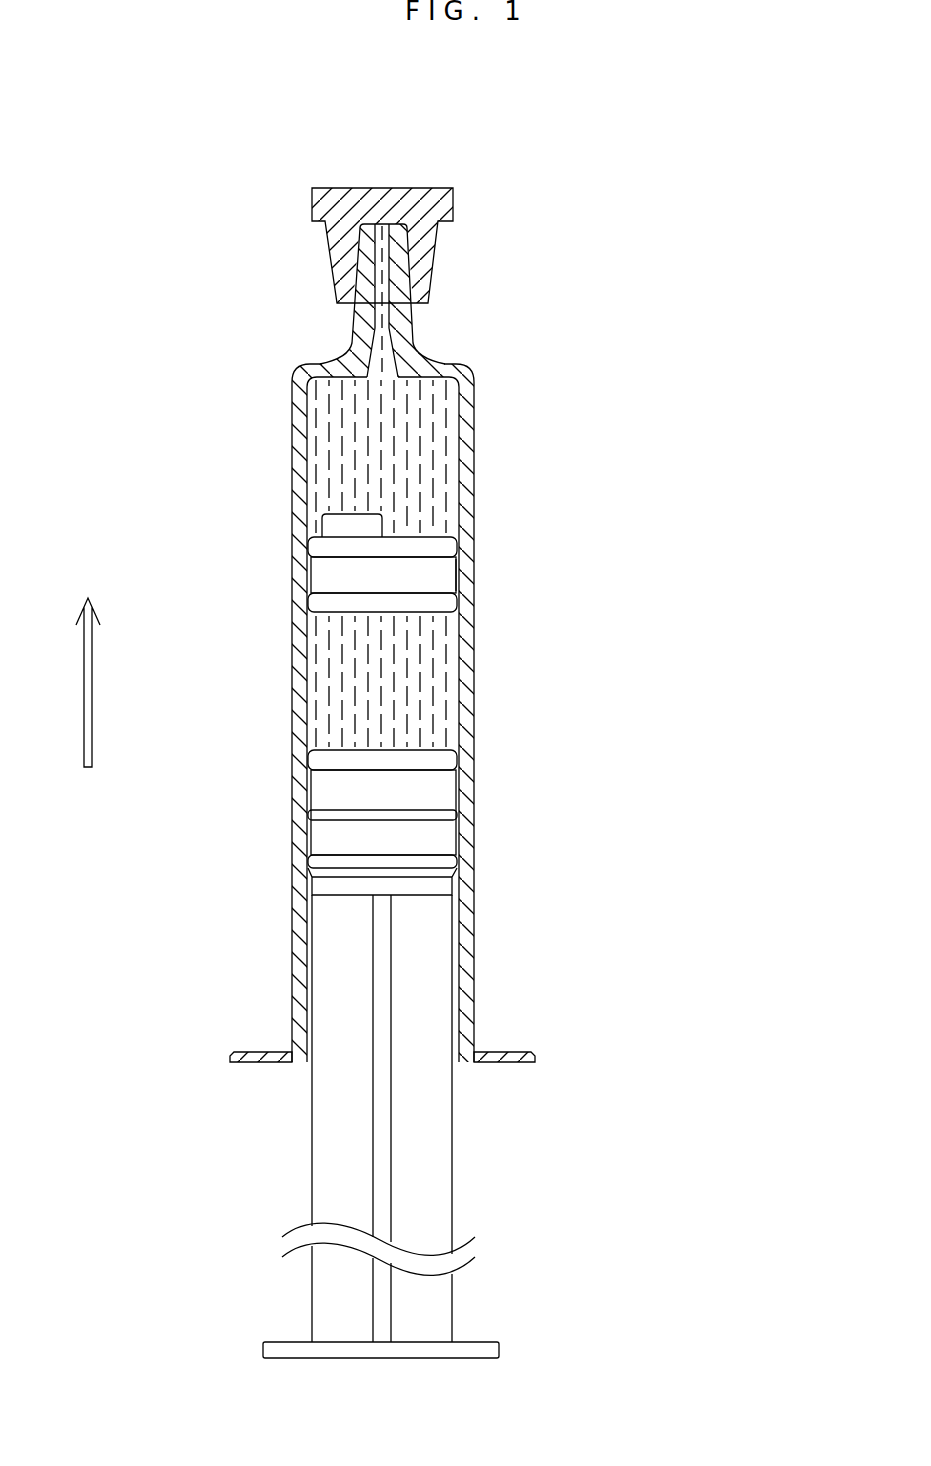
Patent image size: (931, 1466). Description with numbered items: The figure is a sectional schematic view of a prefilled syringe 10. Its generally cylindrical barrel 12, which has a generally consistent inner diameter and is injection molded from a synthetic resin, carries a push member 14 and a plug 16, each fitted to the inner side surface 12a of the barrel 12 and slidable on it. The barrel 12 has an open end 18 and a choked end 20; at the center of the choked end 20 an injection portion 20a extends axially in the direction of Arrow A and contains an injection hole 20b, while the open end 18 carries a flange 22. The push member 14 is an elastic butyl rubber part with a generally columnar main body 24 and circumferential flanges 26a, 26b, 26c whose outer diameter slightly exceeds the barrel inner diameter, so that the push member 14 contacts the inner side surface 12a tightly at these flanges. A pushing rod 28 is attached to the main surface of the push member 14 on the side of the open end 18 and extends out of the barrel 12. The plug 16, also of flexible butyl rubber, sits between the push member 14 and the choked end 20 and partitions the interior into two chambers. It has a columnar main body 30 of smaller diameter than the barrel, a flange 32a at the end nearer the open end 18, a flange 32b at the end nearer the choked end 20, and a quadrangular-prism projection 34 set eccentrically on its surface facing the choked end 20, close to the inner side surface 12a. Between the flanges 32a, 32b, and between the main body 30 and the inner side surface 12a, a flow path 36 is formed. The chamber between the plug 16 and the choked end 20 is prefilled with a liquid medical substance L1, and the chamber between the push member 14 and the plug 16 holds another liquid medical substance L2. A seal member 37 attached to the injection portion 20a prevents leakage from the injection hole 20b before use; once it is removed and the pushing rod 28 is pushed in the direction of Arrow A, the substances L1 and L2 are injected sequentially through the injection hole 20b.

The syringe 10 is at (58, 121).
The barrel 12 is at (284, 797).
The inner side surface 12a is at (455, 454).
The push member 14 is at (560, 735).
The plug 16 is at (215, 494).
The open end 18 is at (310, 1062).
The choked end 20 is at (324, 356).
The injection portion 20a is at (413, 330).
The injection hole 20b is at (375, 285).
The flange 22 is at (267, 1052).
The main body 24 is at (443, 785).
The flange 26a is at (450, 862).
The flange 26b is at (445, 817).
The flange 26c is at (452, 765).
The pushing rod 28 is at (453, 1160).
The main body 30 is at (320, 578).
The flange 32a is at (320, 608).
The flange 32b is at (320, 547).
The projection 34 is at (322, 524).
The flow path 36 is at (446, 577).
The seal member 37 is at (408, 187).
The liquid medical substance L1 is at (325, 425).
The liquid medical substance L2 is at (320, 692).
The Arrow A is at (92, 690).